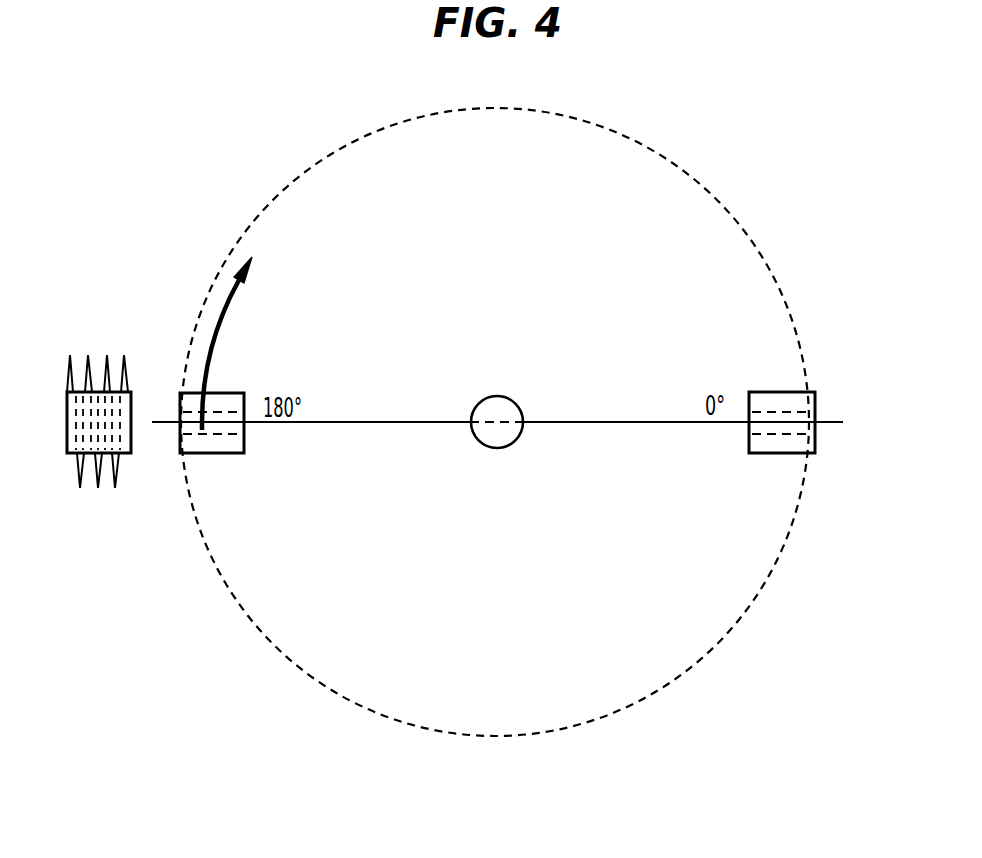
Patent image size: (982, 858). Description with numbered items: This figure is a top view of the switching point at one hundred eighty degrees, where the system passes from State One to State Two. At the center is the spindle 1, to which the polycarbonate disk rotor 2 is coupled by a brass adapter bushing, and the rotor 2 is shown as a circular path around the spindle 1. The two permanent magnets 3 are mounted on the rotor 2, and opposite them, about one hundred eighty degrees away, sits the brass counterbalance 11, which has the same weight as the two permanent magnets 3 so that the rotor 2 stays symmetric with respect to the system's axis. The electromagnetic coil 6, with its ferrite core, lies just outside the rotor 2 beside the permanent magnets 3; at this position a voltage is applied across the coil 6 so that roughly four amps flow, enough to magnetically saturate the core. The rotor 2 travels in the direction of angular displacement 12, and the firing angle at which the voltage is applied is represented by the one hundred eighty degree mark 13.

The spindle 1 is at (516, 403).
The rotor 2 is at (697, 176).
The permanent magnets 3 is at (210, 453).
The electromagnetic coil 6 is at (78, 470).
The counterbalance 11 is at (770, 392).
The direction of angular displacement 12 is at (210, 348).
The 180 degree mark 13 is at (310, 423).